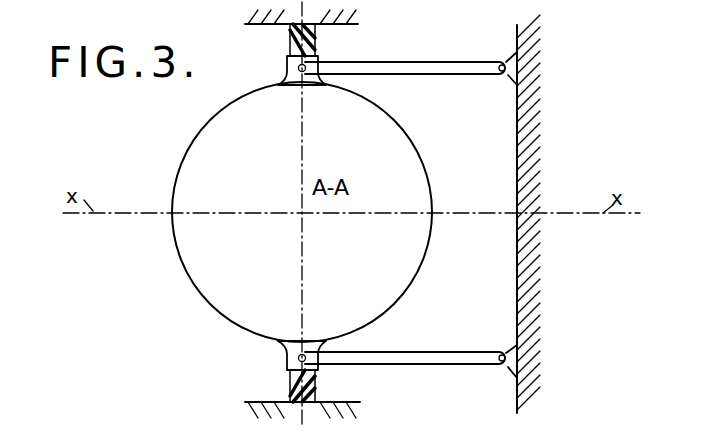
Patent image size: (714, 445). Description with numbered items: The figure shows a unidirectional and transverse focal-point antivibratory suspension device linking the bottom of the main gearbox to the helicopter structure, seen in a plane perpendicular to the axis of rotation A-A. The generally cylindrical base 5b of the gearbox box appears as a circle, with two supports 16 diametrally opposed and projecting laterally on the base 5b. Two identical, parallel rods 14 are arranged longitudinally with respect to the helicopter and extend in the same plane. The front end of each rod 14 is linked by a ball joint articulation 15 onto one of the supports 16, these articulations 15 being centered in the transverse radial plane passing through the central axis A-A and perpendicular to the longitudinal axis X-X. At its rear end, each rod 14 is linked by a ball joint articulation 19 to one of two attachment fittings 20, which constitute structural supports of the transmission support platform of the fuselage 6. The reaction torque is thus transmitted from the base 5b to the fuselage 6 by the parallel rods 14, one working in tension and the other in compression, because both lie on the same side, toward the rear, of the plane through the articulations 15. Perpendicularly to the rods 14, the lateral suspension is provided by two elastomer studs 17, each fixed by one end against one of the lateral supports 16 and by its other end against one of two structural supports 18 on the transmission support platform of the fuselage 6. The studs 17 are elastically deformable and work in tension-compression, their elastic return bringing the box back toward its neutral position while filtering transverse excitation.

The base 5b is at (205, 258).
The fuselage 6 is at (522, 178).
The rods 14 is at (428, 74).
The ball joint articulation 15 is at (305, 76).
The supports 16 is at (290, 76).
The elastomer studs 17 is at (290, 48).
The structural supports 18 is at (340, 24).
The ball joint articulation 19 is at (500, 63).
The attachment fittings 20 is at (506, 78).